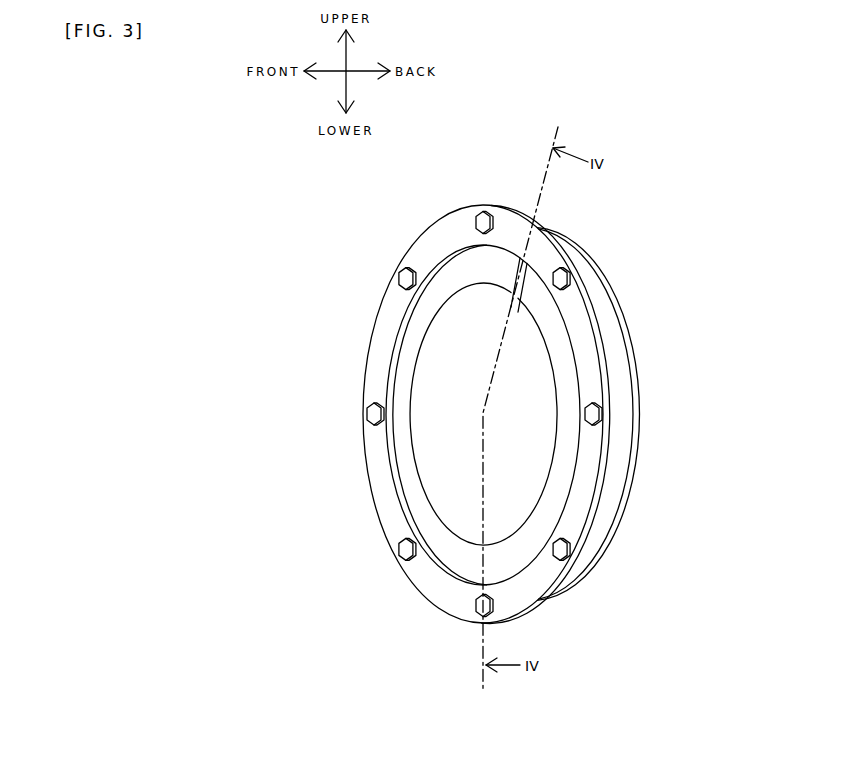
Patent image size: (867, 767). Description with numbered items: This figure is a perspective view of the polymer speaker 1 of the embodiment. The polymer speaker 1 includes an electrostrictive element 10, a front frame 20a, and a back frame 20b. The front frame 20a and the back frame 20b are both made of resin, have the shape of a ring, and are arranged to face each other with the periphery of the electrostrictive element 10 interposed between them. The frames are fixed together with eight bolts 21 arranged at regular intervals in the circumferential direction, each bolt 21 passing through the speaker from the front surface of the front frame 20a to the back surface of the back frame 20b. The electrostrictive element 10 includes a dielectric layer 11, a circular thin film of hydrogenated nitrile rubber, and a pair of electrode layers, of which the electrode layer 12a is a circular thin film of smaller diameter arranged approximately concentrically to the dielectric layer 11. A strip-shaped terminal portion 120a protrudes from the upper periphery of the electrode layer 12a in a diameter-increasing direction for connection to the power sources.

The polymer speaker 1 is at (642, 228).
The electrostrictive element 10 is at (622, 412).
The dielectric layer 11 is at (615, 347).
The electrode layer 12a is at (447, 438).
The front frame 20a is at (390, 313).
The back frame 20b is at (625, 512).
The terminal portion 120a is at (512, 280).
The bolt 21 is at (364, 415).